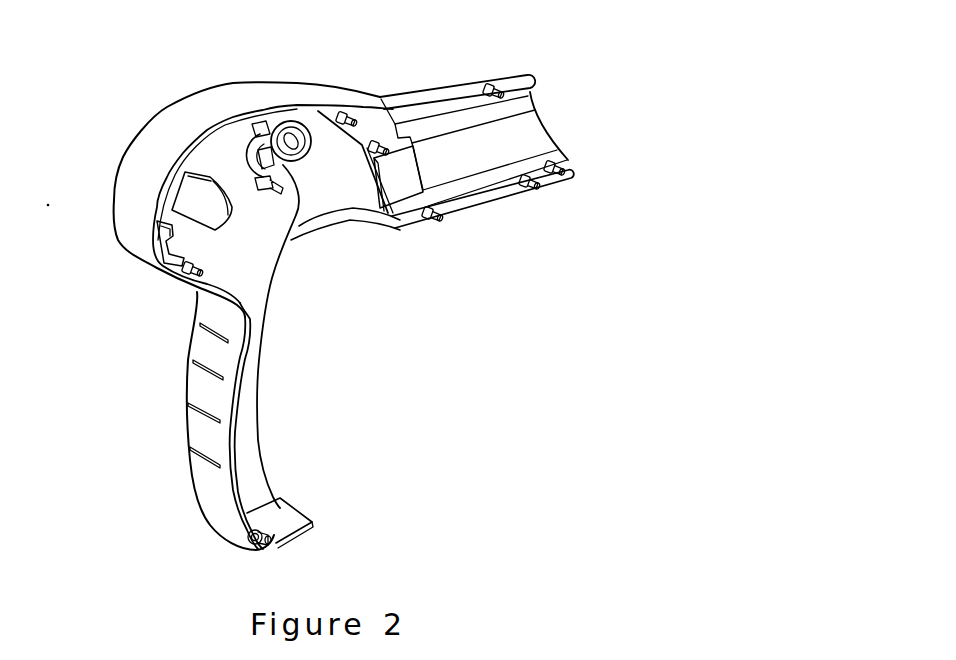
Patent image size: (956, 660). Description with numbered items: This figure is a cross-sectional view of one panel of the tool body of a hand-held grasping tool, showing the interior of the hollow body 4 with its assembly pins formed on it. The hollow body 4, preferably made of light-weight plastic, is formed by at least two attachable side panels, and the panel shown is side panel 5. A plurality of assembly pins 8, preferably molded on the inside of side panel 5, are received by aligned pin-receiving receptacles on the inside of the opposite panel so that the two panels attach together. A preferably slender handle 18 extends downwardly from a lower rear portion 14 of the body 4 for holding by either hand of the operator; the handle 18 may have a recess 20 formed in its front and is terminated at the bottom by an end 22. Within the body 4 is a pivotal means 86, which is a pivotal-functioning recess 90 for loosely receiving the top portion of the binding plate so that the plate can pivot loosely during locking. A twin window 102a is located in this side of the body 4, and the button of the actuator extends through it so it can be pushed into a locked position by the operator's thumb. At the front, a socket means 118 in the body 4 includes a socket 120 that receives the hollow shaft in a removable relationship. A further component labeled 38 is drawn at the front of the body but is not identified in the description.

The hollow body 4 is at (223, 153).
The side panel 5 is at (331, 160).
The assembly pins 8 is at (256, 121).
The lower rear portion 14 is at (173, 293).
The handle 18 is at (197, 393).
The recess 20 is at (245, 438).
The end 22 is at (316, 527).
The barrel 38 is at (545, 115).
The pivotal means 86 is at (315, 84).
The pivotal-functioning recess 90 is at (300, 228).
The twin window 102a is at (190, 197).
The socket means 118 is at (383, 233).
The socket 120 is at (407, 177).